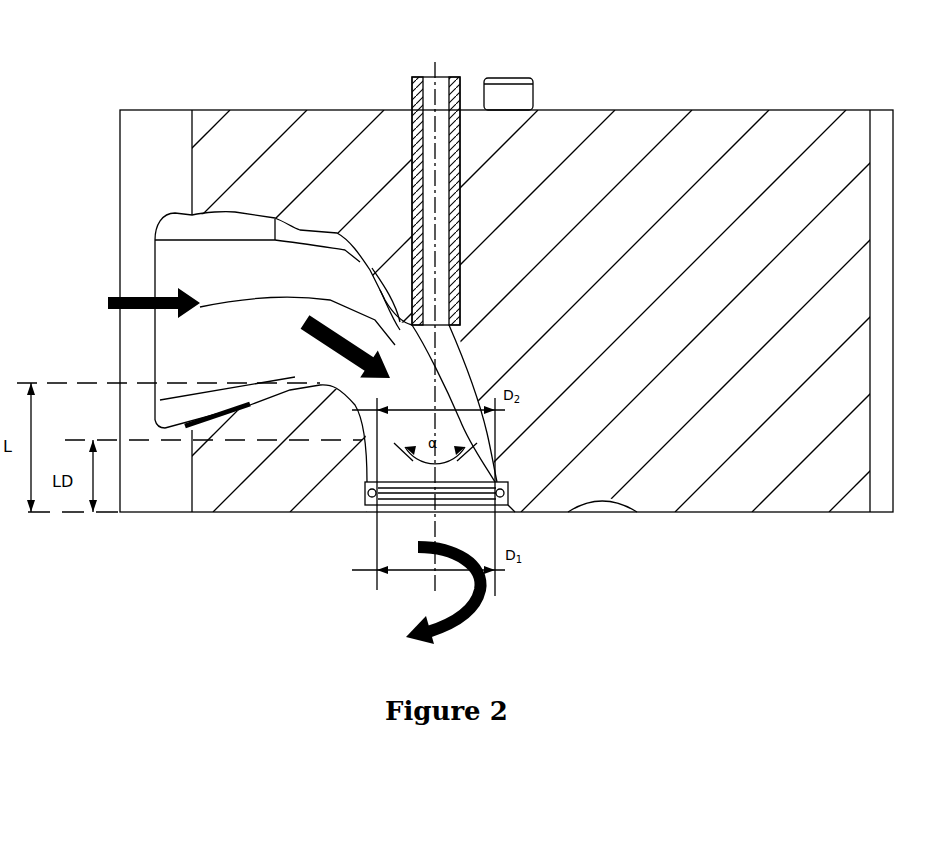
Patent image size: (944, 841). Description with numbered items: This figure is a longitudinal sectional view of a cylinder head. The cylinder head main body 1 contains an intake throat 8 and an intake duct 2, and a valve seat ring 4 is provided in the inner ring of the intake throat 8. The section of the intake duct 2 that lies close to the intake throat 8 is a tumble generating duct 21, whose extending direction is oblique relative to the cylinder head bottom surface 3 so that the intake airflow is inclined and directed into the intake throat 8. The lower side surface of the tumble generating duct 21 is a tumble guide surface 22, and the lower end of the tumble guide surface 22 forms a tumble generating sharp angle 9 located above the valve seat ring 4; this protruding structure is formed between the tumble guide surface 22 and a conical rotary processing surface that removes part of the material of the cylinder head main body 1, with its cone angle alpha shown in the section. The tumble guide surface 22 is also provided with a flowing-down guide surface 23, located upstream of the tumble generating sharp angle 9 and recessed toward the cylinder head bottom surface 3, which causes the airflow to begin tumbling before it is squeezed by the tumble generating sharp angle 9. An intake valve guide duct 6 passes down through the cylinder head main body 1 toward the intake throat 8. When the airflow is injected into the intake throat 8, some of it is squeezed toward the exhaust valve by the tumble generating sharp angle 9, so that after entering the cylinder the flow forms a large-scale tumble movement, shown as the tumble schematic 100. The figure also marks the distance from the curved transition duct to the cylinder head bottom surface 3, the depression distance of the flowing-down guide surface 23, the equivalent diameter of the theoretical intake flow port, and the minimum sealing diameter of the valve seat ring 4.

The cylinder head main body 1 is at (297, 145).
The intake duct 2 is at (193, 280).
The tumble generating duct 21 is at (352, 403).
The tumble guide surface 22 is at (337, 402).
The flowing-down guide surface 23 is at (356, 430).
The cylinder head bottom surface 3 is at (662, 513).
The valve seat ring 4 is at (378, 488).
The intake valve guide duct 6 is at (417, 143).
The intake throat 8 is at (494, 516).
The tumble generating sharp angle 9 is at (367, 494).
The tumble schematic 100 is at (475, 618).